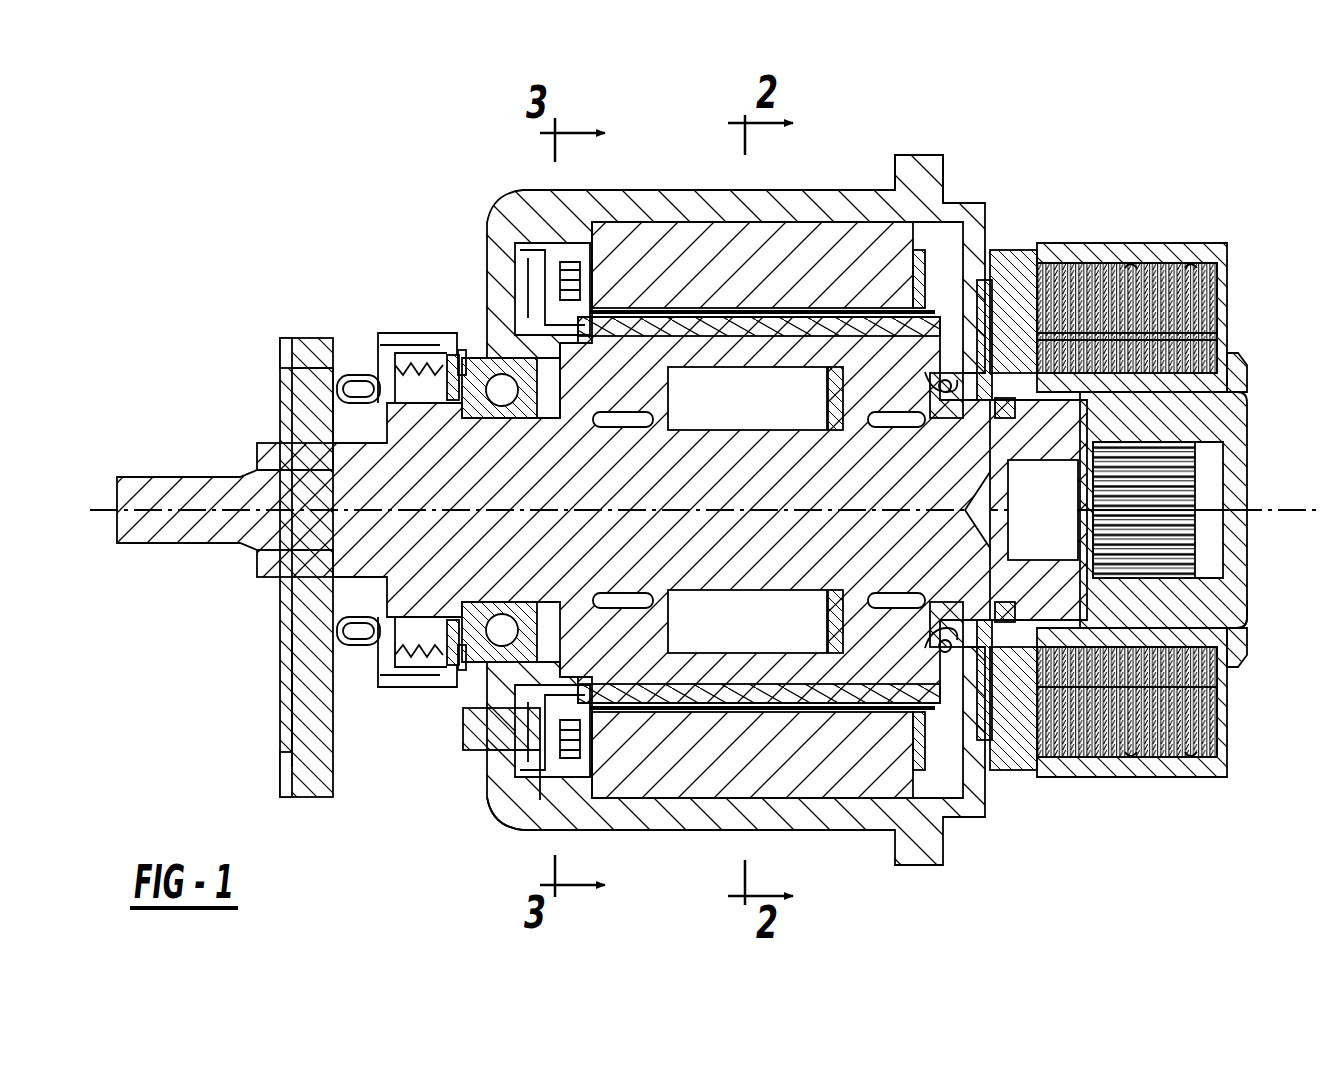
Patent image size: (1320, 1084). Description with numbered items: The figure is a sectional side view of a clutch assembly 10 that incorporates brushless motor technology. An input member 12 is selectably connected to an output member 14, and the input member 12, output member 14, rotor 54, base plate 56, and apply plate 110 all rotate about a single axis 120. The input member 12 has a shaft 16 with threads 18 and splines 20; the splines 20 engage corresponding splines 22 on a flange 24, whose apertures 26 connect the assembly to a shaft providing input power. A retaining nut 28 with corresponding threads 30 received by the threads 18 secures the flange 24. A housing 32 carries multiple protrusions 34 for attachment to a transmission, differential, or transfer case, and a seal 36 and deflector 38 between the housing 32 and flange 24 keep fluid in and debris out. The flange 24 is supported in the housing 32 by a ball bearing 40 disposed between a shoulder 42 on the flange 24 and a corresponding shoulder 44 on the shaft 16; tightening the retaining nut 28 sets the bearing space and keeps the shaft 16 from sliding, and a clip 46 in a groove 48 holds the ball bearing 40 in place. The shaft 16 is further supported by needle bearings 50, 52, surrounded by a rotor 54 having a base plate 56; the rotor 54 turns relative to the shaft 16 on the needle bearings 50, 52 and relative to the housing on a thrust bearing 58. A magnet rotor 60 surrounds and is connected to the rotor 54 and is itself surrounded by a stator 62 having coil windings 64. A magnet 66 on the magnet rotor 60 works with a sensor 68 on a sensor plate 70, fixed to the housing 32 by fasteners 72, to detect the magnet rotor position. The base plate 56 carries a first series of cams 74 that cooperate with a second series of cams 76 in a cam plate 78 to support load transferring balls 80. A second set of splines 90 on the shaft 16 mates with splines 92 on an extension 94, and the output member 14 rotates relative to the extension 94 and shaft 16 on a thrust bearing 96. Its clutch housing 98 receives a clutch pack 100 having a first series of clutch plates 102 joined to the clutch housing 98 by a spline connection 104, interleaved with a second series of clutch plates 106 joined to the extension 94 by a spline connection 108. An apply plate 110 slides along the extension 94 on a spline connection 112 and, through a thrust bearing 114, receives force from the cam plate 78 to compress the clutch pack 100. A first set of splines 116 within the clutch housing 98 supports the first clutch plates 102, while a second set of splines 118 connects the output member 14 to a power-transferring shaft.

The clutch assembly 10 is at (262, 222).
The input member 12 is at (162, 495).
The output member 14 is at (1246, 418).
The shaft 16 is at (200, 525).
The threads 18 is at (243, 470).
The splines 20 is at (505, 420).
The corresponding splines 22 is at (417, 425).
The flange 24 is at (300, 795).
The apertures 26 is at (292, 742).
The retaining nut 28 is at (290, 440).
The corresponding threads 30 is at (280, 572).
The housing 32 is at (505, 238).
The protrusions 34 is at (905, 175).
The seal 36 is at (400, 372).
The deflector 38 is at (348, 380).
The ball bearing 40 is at (470, 650).
The shoulder 42 is at (538, 515).
The corresponding shoulder 44 is at (560, 448).
The clip 46 is at (453, 365).
The groove 48 is at (462, 352).
The needle bearing 50 is at (625, 600).
The needle bearing 52 is at (880, 600).
The rotor 54 is at (660, 388).
The base plate 56 is at (822, 430).
The thrust bearing 58 is at (577, 628).
The magnet rotor 60 is at (838, 760).
The stator 62 is at (702, 265).
The coil windings 64 is at (595, 815).
The magnet 66 is at (530, 805).
The sensor 68 is at (545, 280).
The sensor plate 70 is at (515, 770).
The fasteners 72 is at (482, 750).
The first series of cams 74 is at (935, 380).
The second series of cams 76 is at (985, 330).
The cam plate 78 is at (990, 727).
The load transferring balls 80 is at (870, 400).
The second set of splines 90 is at (945, 398).
The splines 92 is at (1005, 600).
The extension 94 is at (1232, 355).
The thrust bearing 96 is at (1242, 604).
The clutch housing 98 is at (1180, 762).
The clutch pack 100 is at (1128, 243).
The first series of clutch plates 102 is at (1045, 275).
The spline connection 104 is at (1145, 262).
The second series of clutch plates 106 is at (1043, 510).
The spline connection 108 is at (1185, 345).
The apply plate 110 is at (1040, 772).
The spline connection 112 is at (1018, 408).
The thrust bearing 114 is at (1075, 740).
The first set of splines 116 is at (1195, 265).
The second set of splines 118 is at (1160, 472).
The axis 120 is at (95, 515).